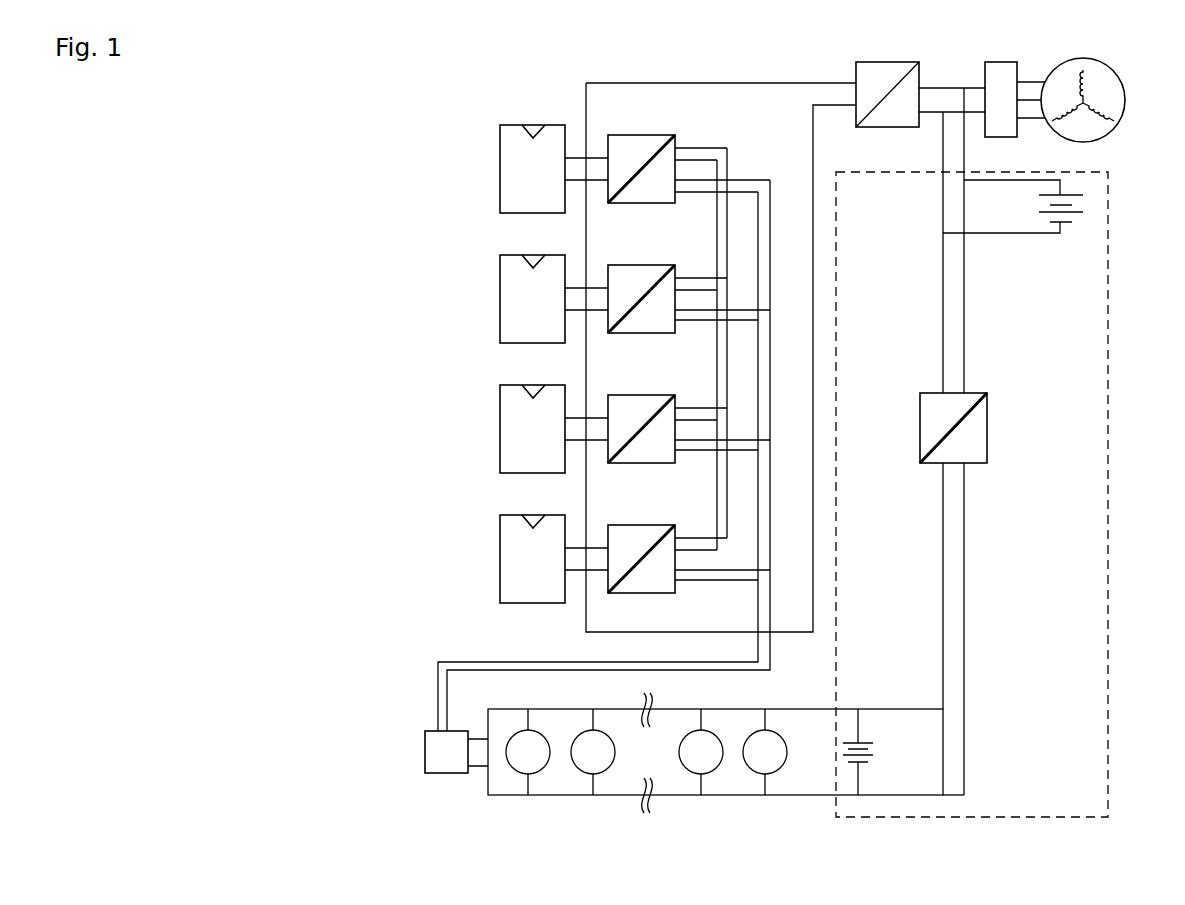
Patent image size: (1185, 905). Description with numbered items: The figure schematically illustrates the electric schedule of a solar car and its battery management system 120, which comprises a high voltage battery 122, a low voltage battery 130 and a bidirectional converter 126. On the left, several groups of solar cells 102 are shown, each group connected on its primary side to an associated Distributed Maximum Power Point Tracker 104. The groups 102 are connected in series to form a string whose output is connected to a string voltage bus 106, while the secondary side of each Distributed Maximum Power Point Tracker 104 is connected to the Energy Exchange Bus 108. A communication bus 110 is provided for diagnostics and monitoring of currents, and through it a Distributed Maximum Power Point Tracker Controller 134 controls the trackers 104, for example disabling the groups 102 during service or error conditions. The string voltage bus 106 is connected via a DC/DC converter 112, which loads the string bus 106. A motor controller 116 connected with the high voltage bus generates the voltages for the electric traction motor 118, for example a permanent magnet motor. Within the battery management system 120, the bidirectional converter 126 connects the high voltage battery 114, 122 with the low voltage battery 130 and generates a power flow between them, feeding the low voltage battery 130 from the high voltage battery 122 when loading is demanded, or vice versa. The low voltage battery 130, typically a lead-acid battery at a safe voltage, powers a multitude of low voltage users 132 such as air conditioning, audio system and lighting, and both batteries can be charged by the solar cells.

The groups of solar cells 102 is at (525, 558).
The Distributed Maximum Power Point Tracker 104 is at (660, 567).
The string voltage bus 106 is at (832, 75).
The Energy Exchange Bus 108 is at (707, 230).
The communication bus 110 is at (747, 360).
The DC/DC converter 112 is at (905, 110).
The high voltage battery 114 is at (936, 82).
The motor controller 116 is at (997, 80).
The traction motor 118 is at (1086, 75).
The battery management system 120 is at (1108, 373).
The high voltage battery 122 is at (1088, 205).
The bidirectional converter 126 is at (970, 445).
The low voltage battery 130 is at (863, 745).
The low voltage users 132 is at (528, 757).
The Distributed Maximum Power Point Tracker Controller 134 is at (447, 747).